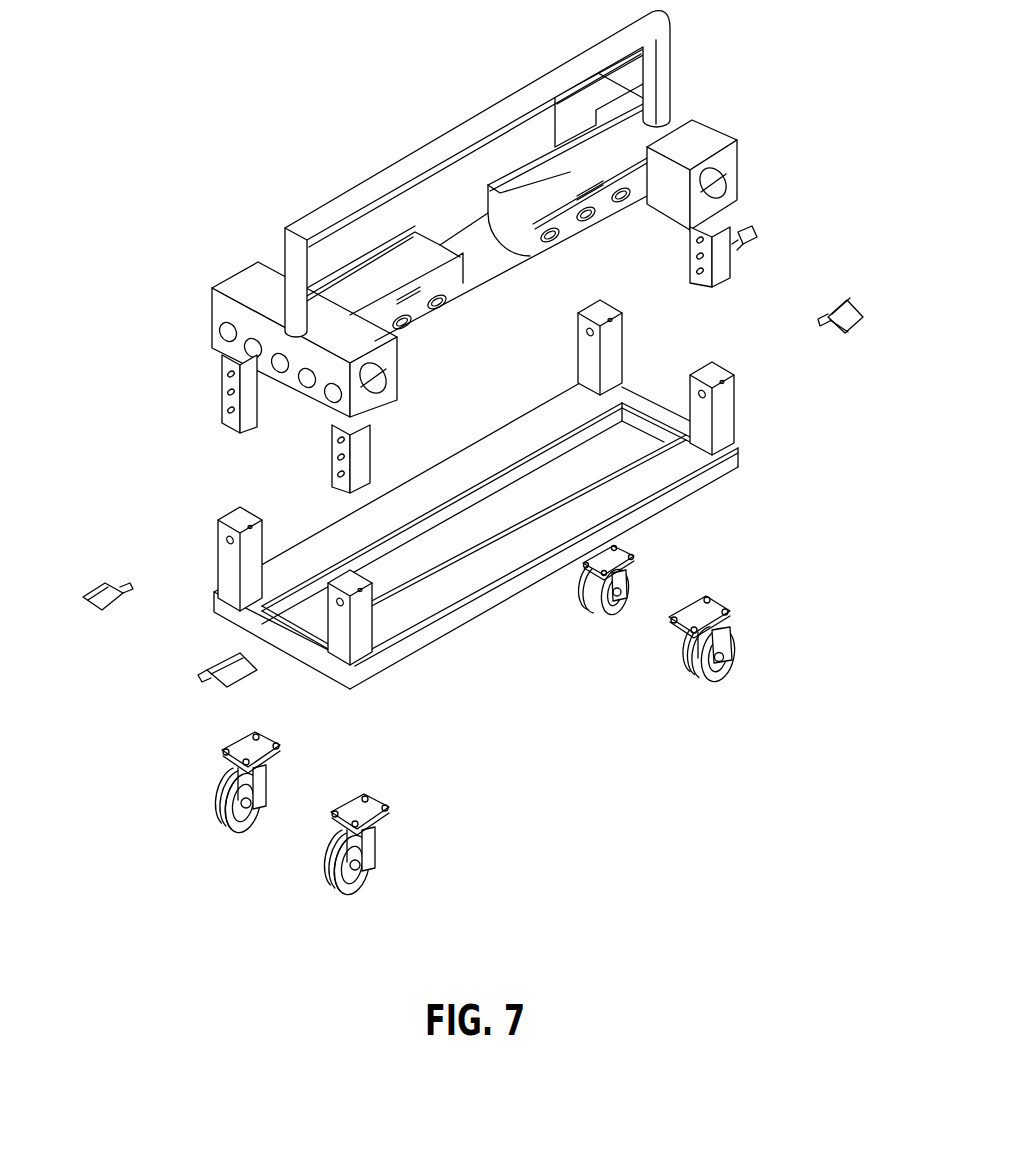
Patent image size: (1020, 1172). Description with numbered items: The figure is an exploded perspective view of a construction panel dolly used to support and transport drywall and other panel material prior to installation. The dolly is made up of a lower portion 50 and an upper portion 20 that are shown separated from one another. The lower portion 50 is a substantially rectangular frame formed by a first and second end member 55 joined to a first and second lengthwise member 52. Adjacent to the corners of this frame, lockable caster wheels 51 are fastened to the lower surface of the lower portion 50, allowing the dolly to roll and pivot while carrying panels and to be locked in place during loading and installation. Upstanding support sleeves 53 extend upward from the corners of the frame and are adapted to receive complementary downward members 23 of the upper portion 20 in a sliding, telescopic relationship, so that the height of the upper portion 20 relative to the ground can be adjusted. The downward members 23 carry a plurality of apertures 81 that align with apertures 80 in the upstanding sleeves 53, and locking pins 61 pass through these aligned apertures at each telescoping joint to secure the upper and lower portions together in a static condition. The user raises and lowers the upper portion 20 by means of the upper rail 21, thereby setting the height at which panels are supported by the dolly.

The upper portion 20 is at (482, 252).
The upper rail 21 is at (460, 128).
The downward members 23 is at (477, 338).
The lower portion 50 is at (504, 503).
The caster wheels 51 is at (640, 567).
The lengthwise member 52 is at (493, 440).
The upstanding support sleeves 53 is at (477, 486).
The end member 55 is at (653, 407).
The locking pins 61 is at (848, 298).
The aperture 80 is at (227, 535).
The aperture 81 is at (228, 411).